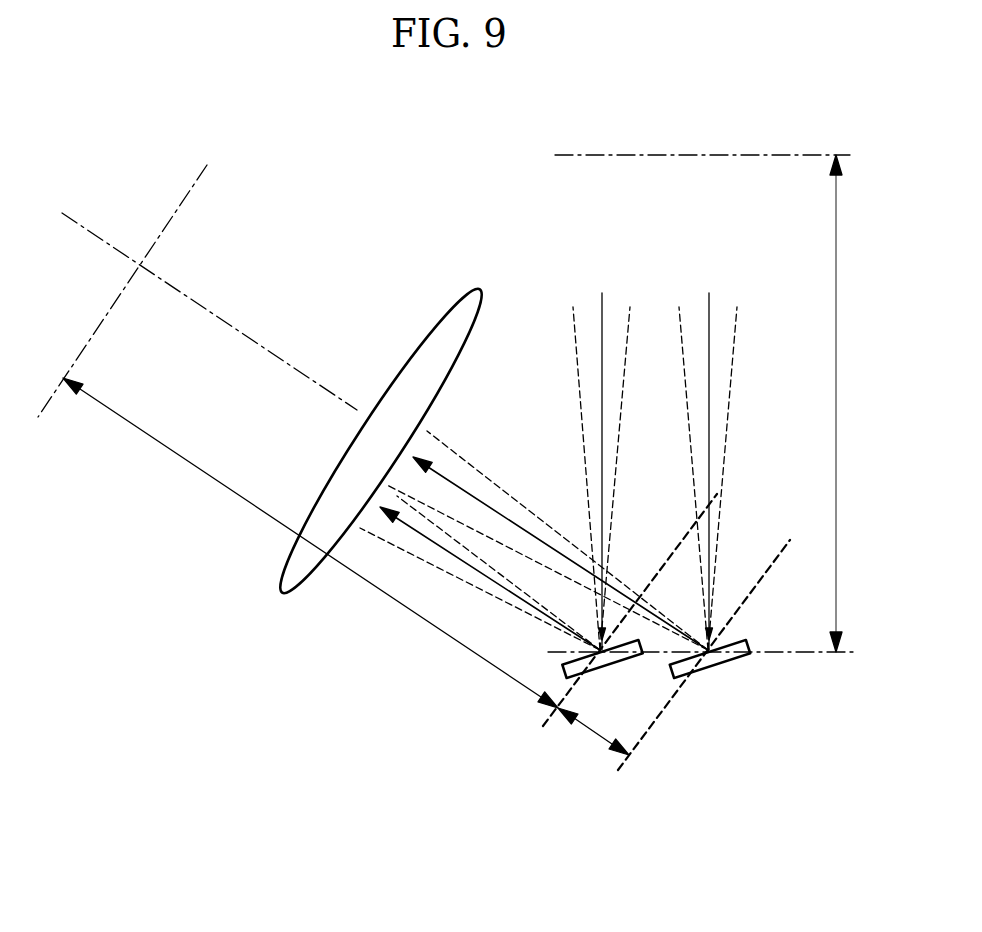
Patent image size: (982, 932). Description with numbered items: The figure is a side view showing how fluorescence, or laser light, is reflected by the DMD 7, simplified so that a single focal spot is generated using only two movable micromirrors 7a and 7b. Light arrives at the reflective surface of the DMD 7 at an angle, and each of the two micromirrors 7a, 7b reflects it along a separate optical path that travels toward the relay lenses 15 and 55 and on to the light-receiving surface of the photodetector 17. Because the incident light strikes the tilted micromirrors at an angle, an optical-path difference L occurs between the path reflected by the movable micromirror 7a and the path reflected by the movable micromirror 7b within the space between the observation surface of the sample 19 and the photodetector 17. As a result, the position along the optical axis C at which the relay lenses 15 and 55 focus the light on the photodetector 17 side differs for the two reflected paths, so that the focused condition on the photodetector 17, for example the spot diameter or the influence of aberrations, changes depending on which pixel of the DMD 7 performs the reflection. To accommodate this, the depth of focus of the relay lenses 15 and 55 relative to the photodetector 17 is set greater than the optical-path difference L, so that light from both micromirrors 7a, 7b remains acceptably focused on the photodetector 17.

The DMD 7 is at (669, 646).
The movable micromirror 7a is at (613, 667).
The movable micromirror 7b is at (667, 750).
The relay lens 15 is at (278, 588).
The relay lens 55 is at (324, 455).
The photodetector 17 is at (185, 198).
The sample 19 is at (588, 156).
The optical axis C is at (247, 337).
The optical-path difference L is at (346, 585).